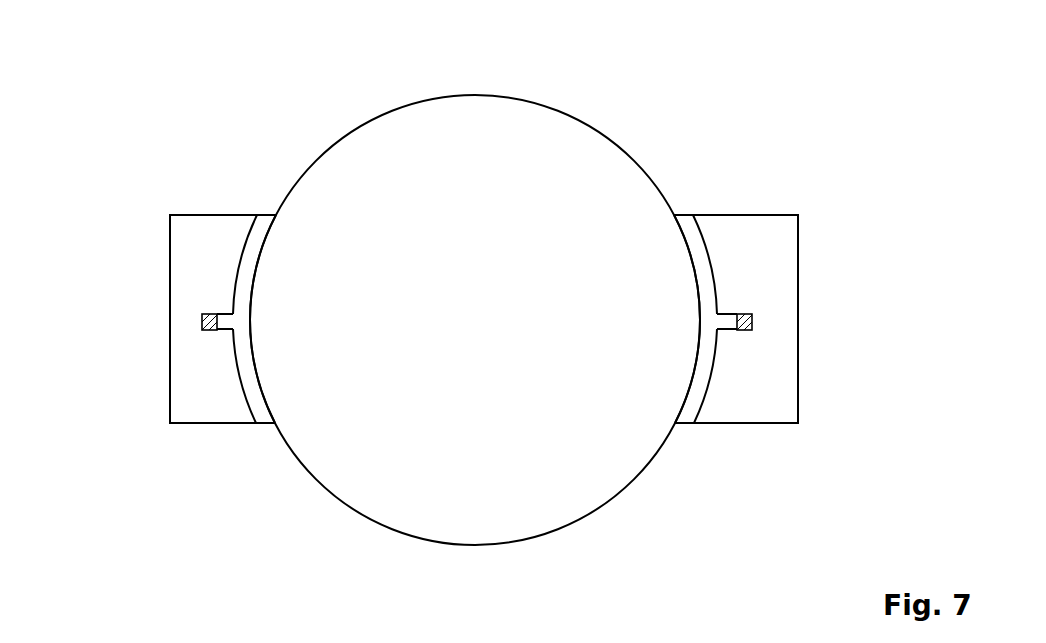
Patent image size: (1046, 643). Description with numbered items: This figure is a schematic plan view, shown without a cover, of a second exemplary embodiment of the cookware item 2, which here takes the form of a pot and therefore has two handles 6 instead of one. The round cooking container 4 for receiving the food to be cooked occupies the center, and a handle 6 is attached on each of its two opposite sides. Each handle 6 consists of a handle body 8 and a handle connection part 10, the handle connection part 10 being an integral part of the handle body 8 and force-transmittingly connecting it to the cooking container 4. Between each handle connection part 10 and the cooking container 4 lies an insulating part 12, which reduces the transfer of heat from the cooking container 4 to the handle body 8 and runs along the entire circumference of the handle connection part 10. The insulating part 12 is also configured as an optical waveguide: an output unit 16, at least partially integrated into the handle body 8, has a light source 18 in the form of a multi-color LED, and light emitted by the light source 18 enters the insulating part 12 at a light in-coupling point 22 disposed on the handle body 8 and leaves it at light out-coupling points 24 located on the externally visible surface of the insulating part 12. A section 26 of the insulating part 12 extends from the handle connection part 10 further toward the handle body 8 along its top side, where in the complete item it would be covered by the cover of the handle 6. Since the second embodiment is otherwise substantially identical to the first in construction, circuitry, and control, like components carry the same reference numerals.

The cookware item 2 is at (116, 490).
The cooking container 4 is at (388, 467).
The handle 6 is at (180, 440).
The handle body 8 is at (211, 410).
The handle connection part 10 is at (267, 438).
The insulating part 12 is at (247, 270).
The output unit 16 is at (196, 193).
The light source 18 is at (745, 330).
The light in-coupling point 22 is at (220, 305).
The light out-coupling points 24 is at (270, 232).
The section of insulating part 26 is at (227, 318).